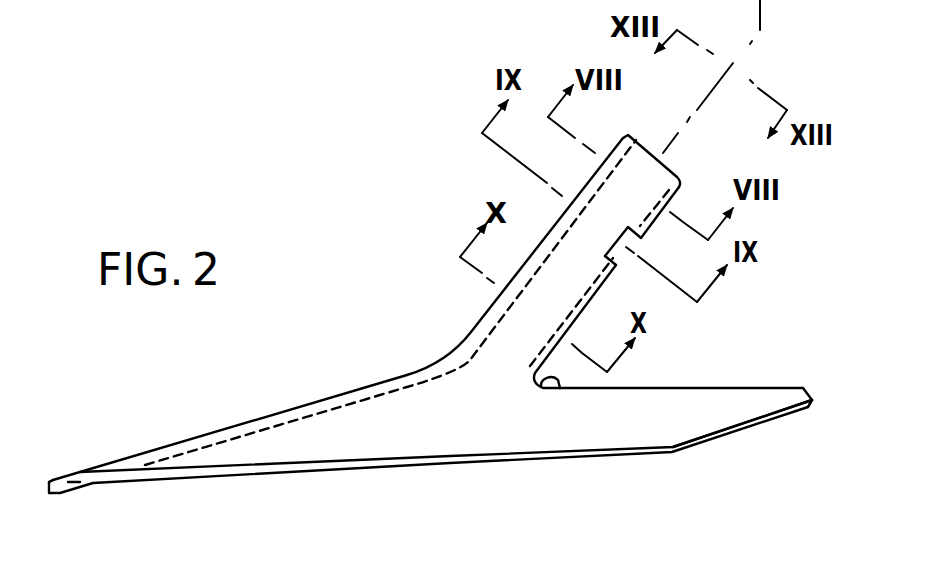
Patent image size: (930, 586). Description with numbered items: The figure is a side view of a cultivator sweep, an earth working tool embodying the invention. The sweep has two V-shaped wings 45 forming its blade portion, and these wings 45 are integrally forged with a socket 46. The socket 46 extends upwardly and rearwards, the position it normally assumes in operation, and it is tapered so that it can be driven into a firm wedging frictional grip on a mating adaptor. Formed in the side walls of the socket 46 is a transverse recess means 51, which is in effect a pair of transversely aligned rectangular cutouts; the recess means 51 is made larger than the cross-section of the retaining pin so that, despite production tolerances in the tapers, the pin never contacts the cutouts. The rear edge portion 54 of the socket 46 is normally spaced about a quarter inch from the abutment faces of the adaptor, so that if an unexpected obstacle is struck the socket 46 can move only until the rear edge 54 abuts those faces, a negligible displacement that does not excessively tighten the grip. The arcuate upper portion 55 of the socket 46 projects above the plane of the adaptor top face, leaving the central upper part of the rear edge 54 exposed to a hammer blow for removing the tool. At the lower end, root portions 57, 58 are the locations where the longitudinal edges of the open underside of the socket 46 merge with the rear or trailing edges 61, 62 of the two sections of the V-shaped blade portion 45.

The V-shaped wings 45 is at (617, 427).
The socket 46 is at (582, 292).
The transverse recess means 51 is at (637, 260).
The rear edge portion 54 is at (665, 165).
The arcuate upper portion 55 is at (629, 135).
The root portion 57 is at (430, 446).
The root portion 58 is at (557, 383).
The rear or trailing edge 61 is at (742, 423).
The rear or trailing edge 62 is at (777, 387).